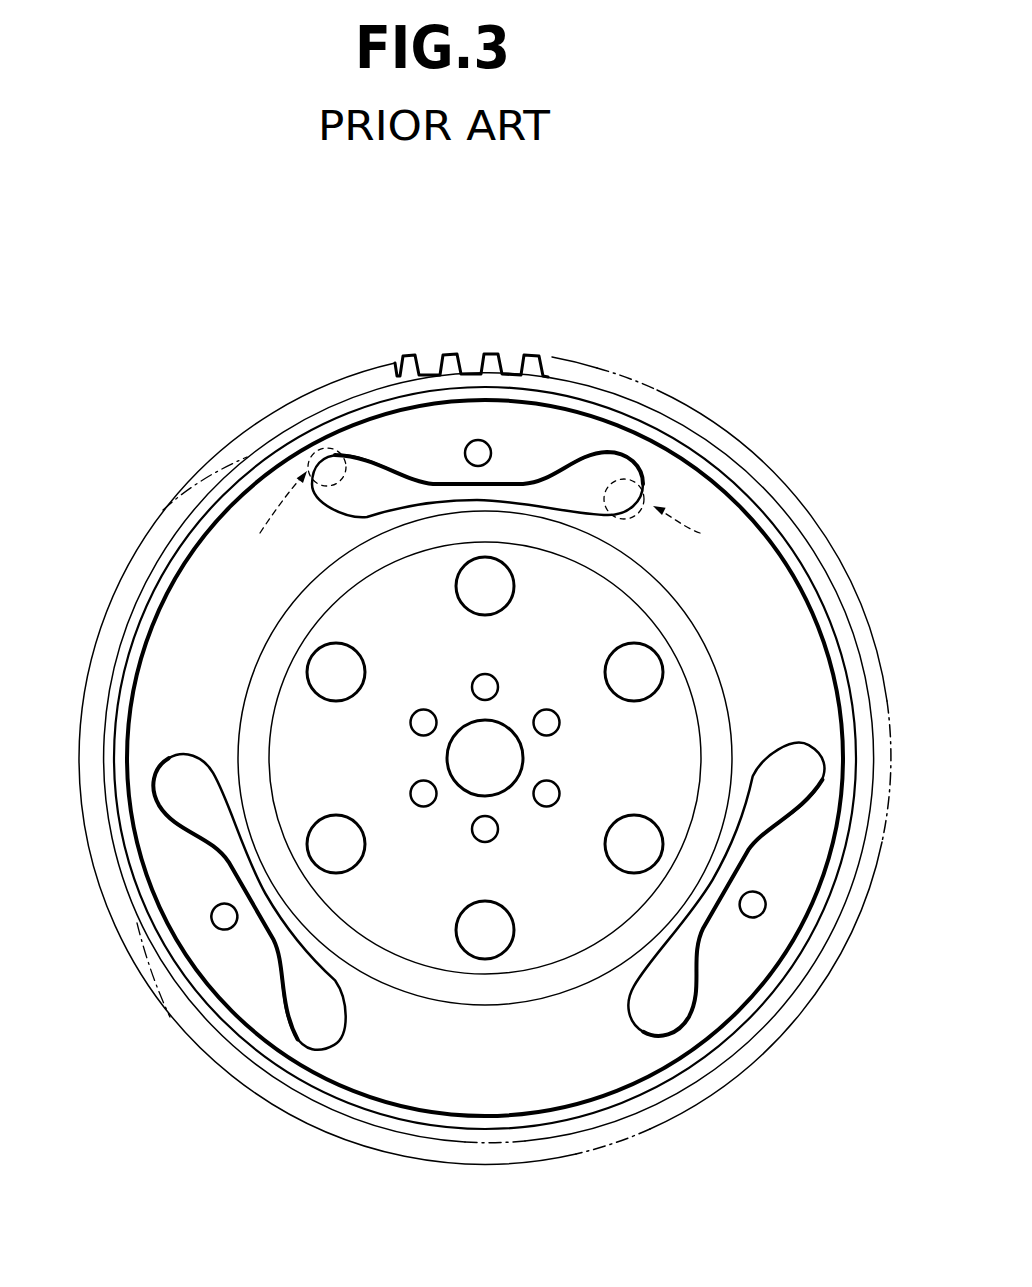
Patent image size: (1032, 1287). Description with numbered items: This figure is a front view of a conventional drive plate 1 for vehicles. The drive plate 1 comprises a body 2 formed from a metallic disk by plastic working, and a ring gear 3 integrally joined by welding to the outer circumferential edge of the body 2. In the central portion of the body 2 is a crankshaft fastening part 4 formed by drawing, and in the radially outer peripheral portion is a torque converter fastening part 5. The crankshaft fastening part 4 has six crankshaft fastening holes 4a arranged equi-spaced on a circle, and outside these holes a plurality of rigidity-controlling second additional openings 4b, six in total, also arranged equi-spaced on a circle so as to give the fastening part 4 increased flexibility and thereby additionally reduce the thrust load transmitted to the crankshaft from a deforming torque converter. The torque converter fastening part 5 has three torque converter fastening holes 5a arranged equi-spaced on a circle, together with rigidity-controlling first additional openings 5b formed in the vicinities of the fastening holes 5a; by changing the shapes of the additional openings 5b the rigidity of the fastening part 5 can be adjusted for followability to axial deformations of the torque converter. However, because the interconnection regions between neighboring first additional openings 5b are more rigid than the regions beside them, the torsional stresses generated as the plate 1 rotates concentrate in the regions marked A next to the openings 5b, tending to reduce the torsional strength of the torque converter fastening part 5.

The drive plate 1 is at (185, 395).
The body 2 is at (905, 480).
The ring gear 3 is at (536, 357).
The crankshaft fastening part 4 is at (620, 618).
The crankshaft fastening holes 4a is at (546, 708).
The second additional openings 4b is at (650, 830).
The torque converter fastening part 5 is at (765, 563).
The torque converter fastening holes 5a is at (490, 446).
The first additional openings 5b is at (640, 462).